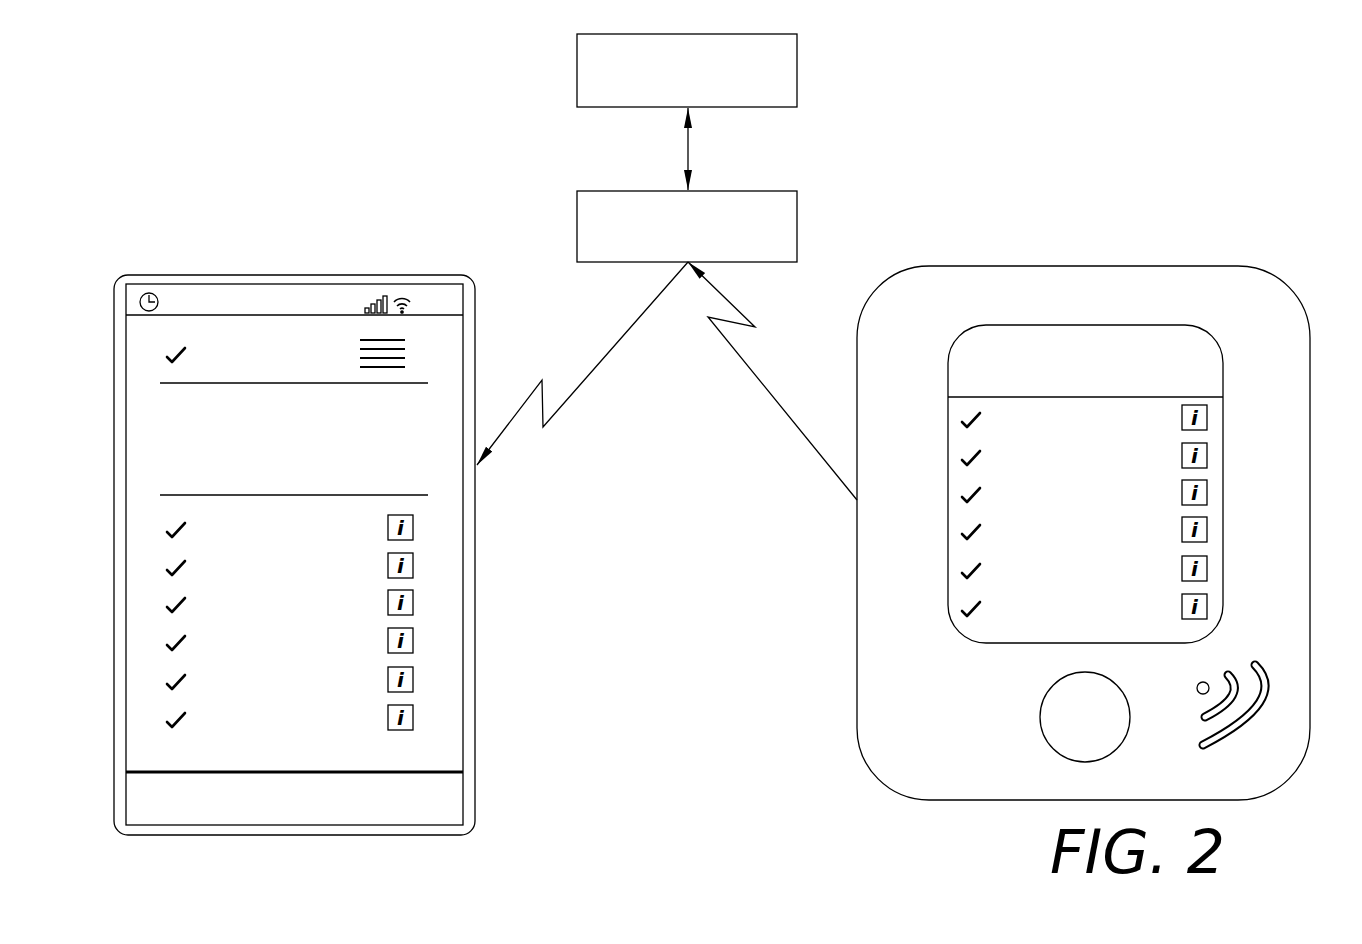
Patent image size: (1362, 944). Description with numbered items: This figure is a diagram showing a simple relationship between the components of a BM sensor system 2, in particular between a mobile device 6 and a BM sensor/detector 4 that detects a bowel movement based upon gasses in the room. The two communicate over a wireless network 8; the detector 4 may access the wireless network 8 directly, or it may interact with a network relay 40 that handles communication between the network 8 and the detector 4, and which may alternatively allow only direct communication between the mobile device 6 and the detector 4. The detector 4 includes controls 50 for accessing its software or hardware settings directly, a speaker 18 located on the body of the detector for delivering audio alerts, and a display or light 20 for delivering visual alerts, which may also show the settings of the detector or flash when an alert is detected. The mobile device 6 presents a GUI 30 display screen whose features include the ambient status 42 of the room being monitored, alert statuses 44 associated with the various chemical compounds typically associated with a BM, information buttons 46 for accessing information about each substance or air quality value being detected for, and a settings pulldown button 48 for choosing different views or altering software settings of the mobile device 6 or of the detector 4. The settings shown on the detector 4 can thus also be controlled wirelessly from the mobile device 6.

The BM sensor system 2 is at (1152, 160).
The BM sensor/detector 4 is at (1204, 254).
The mobile device 6 is at (310, 250).
The wireless network 8 is at (687, 70).
The network relay 40 is at (687, 226).
The display or light 20 is at (1222, 412).
The speaker 18 is at (1228, 672).
The controls 50 is at (1040, 712).
The GUI 30 is at (445, 457).
The settings pulldown button 48 is at (360, 349).
The ambient status 42 is at (290, 520).
The alert statuses 44 is at (178, 527).
The information buttons 46 is at (388, 635).